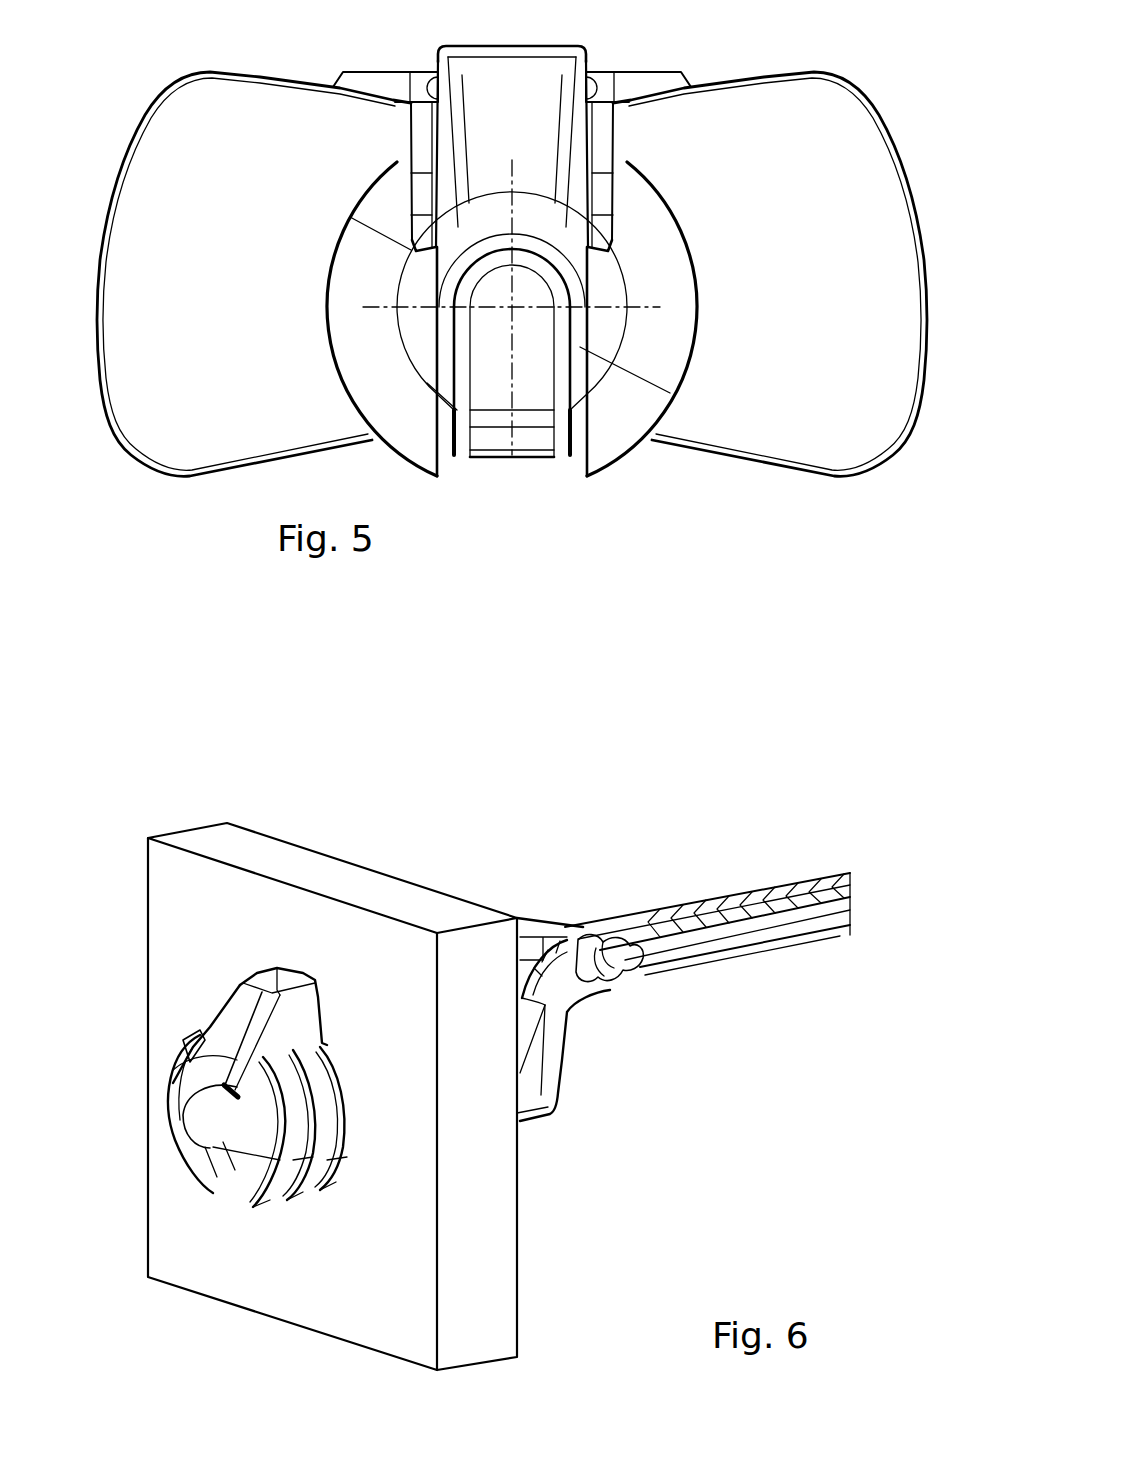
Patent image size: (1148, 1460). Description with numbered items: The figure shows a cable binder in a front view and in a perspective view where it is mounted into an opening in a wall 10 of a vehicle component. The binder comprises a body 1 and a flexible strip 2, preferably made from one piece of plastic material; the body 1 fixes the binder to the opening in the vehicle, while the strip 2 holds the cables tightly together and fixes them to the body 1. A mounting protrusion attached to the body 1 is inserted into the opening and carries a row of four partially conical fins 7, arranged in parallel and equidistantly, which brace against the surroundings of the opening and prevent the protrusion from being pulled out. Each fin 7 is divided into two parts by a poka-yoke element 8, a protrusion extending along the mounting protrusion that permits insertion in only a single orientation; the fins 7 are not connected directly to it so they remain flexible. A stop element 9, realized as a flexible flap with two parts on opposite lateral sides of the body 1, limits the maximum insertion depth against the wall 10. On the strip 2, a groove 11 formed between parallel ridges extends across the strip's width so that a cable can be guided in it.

In FIG. 6, the body 1 is at (540, 1090).
In FIG. 6, the flexible strip 2 is at (800, 917).
In FIG. 5, the fin 7 is at (615, 420).
In FIG. 6, the fin 7 is at (250, 1183).
In FIG. 5, the poka-yoke element 8 is at (507, 97).
In FIG. 6, the poka-yoke element 8 is at (278, 967).
In FIG. 5, the stop element 9 is at (137, 248).
In FIG. 6, the wall 10 is at (420, 907).
In FIG. 6, the groove 11 is at (617, 992).